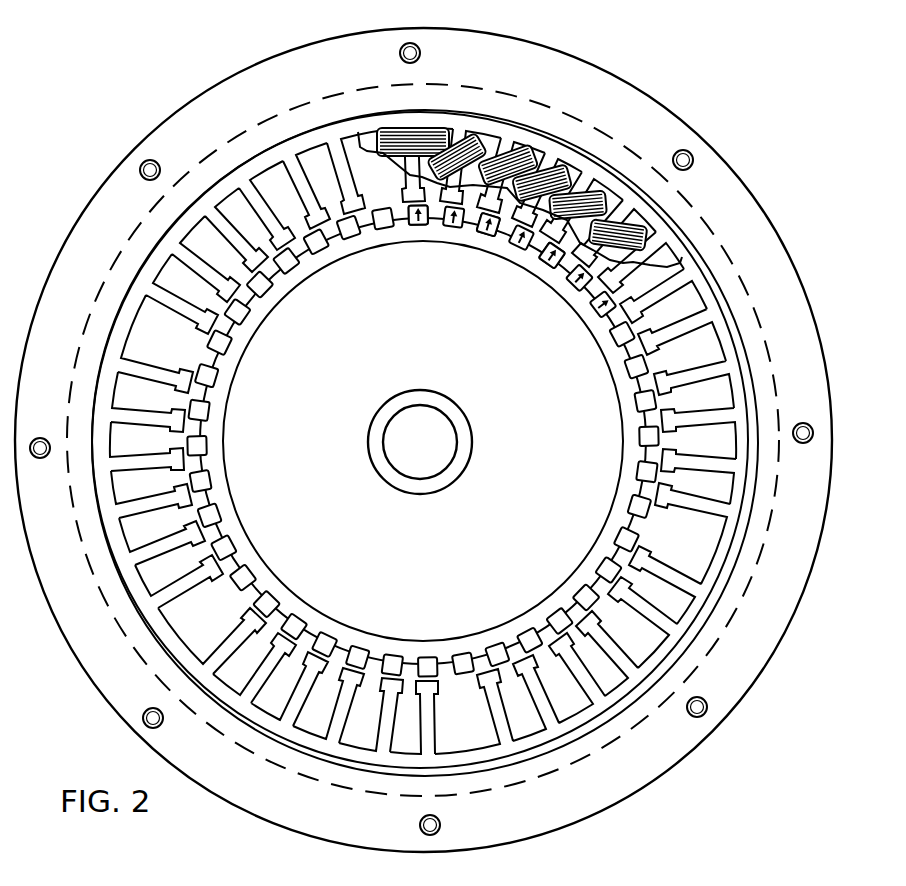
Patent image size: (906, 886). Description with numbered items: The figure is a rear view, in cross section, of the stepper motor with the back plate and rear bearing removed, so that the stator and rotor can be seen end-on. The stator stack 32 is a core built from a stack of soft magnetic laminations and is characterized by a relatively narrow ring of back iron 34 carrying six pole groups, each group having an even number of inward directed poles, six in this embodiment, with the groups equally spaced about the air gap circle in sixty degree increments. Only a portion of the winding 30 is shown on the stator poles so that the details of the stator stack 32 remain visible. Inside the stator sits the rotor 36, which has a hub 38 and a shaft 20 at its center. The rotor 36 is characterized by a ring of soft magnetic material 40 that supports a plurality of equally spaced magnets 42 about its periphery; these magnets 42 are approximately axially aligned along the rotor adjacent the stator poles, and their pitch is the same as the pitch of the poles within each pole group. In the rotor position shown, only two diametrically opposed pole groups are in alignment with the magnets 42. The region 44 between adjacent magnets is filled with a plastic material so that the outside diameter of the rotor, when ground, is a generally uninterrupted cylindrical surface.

The shaft 20 is at (447, 410).
The winding 30 is at (545, 182).
The stator stack 32 is at (336, 111).
The ring of back iron 34 is at (268, 147).
The rotor 36 is at (245, 383).
The hub 38 is at (287, 563).
The ring of soft magnetic material 40 is at (418, 234).
The magnets 42 is at (488, 241).
The region between magnets 44 is at (552, 268).